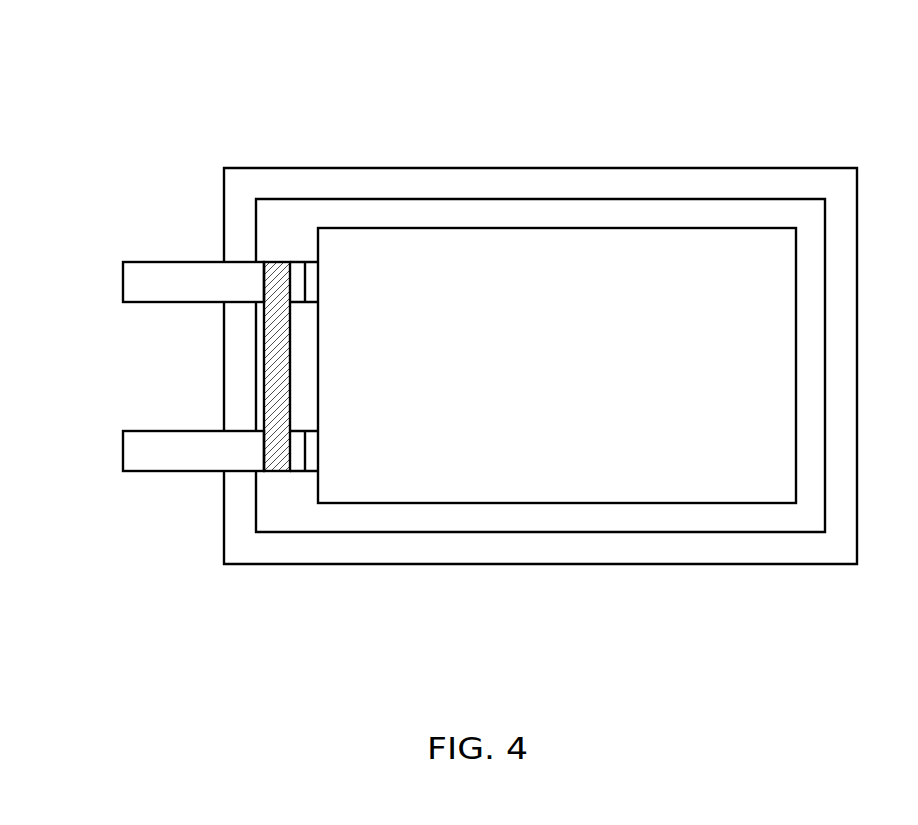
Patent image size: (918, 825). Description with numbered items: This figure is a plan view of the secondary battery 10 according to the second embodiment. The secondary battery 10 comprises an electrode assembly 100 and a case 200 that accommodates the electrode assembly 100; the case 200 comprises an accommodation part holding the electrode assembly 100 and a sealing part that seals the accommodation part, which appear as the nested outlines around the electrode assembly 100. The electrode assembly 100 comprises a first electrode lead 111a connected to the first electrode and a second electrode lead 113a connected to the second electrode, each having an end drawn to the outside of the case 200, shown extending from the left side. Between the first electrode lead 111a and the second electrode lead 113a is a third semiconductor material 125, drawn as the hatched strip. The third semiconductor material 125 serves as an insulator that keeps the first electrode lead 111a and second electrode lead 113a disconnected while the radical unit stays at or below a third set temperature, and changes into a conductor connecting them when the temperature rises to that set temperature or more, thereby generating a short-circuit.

The secondary battery 10 is at (647, 90).
The electrode assembly 100 is at (561, 206).
The case 200 is at (647, 150).
The third semiconductor material 125 is at (266, 362).
The second electrode lead 113a is at (128, 280).
The first electrode lead 111a is at (128, 449).